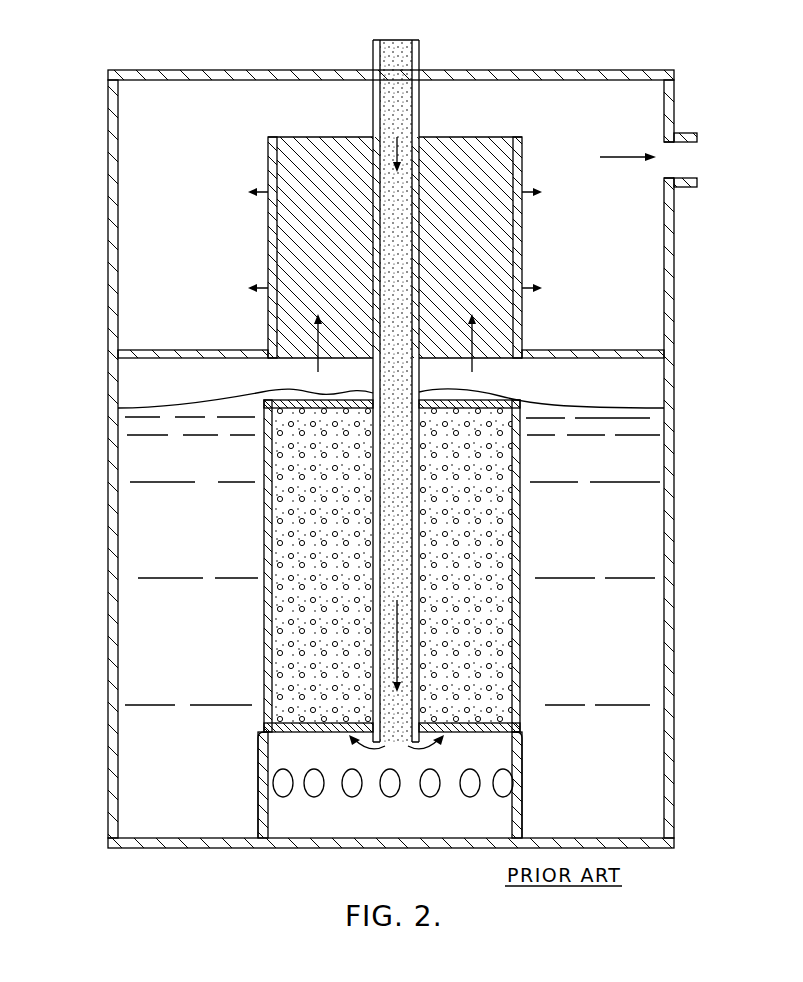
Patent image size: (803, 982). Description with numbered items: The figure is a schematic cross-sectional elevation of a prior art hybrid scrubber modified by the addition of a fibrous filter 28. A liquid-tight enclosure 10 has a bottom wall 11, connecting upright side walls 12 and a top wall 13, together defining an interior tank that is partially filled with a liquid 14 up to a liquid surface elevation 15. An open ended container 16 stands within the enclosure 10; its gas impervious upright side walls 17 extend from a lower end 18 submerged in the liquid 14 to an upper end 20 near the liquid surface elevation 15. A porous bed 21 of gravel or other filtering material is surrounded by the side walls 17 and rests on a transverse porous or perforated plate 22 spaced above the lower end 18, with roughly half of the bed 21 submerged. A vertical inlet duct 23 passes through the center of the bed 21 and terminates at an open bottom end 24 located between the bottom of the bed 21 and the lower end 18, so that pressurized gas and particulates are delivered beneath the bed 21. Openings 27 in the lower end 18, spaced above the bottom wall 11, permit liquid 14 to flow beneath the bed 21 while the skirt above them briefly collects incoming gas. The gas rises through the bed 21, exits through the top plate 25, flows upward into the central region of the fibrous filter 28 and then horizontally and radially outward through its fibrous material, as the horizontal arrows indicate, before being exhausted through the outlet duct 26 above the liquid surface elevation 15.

The liquid-tight enclosure 10 is at (357, 452).
The bottom wall 11 is at (212, 849).
The upright side walls 12 is at (108, 643).
The top wall 13 is at (283, 69).
The liquid 14 is at (391, 532).
The liquid surface elevation 15 is at (197, 405).
The open ended container 16 is at (394, 562).
The gas impervious upright side walls 17 is at (520, 605).
The lower end 18 is at (418, 785).
The upper end 20 is at (512, 400).
The porous bed 21 is at (490, 652).
The transverse porous or perforated plate 22 is at (313, 733).
The inlet duct 23 is at (419, 110).
The open bottom end 24 is at (396, 752).
The transverse porous or perforated plate 25 is at (357, 400).
The outlet duct 26 is at (686, 188).
The openings 27 is at (470, 791).
The fibrous filter 28 is at (318, 136).